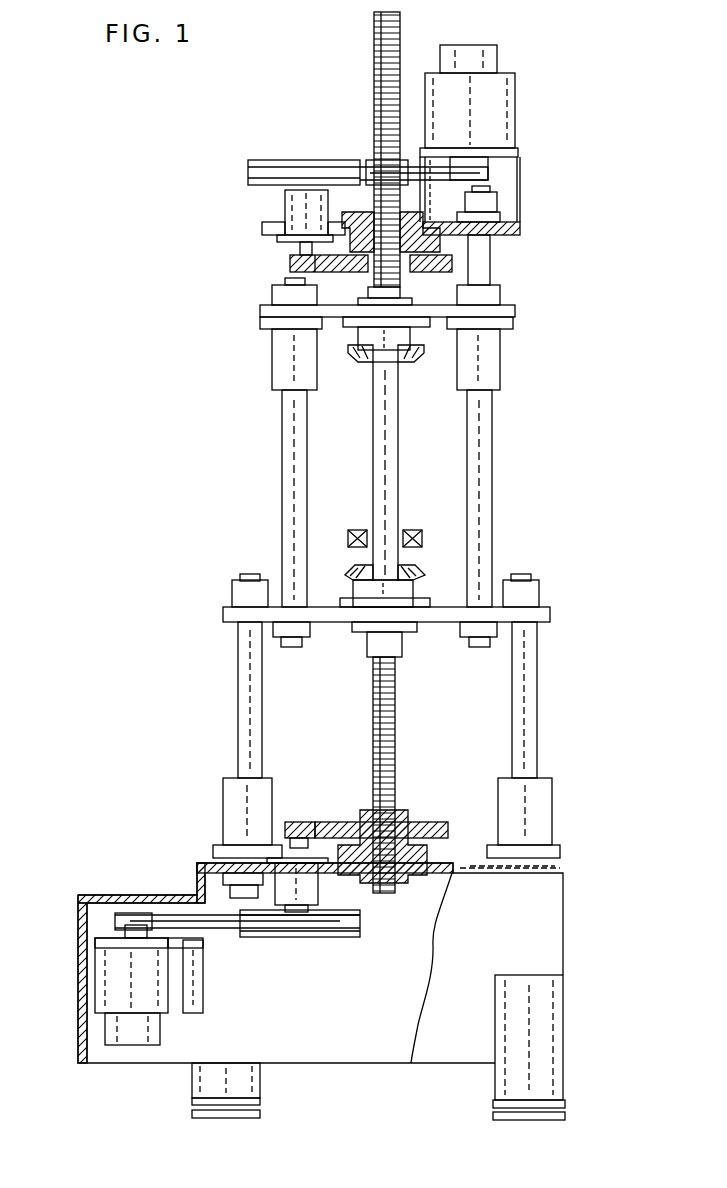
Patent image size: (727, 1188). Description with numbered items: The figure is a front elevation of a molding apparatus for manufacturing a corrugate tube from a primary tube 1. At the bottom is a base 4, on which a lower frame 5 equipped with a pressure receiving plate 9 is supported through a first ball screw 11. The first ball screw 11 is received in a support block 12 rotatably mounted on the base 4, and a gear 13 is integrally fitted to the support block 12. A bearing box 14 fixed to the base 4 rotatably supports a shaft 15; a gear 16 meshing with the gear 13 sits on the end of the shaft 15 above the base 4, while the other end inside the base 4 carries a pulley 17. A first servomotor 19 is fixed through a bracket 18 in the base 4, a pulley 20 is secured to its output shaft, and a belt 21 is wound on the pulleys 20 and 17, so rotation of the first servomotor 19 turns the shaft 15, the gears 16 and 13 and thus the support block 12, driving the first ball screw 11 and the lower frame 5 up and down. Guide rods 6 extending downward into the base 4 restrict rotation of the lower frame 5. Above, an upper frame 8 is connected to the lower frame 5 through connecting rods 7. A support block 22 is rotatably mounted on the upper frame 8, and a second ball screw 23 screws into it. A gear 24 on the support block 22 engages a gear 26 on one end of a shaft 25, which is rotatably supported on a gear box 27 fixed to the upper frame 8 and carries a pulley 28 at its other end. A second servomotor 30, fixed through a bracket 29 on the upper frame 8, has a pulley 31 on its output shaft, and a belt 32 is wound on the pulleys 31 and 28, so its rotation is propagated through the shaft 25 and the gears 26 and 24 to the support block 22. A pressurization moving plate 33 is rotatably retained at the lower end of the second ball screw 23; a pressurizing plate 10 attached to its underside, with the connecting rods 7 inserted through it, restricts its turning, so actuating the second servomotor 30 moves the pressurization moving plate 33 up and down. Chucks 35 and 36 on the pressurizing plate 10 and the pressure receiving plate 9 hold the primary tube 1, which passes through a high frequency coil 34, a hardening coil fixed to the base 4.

The primary tube 1 is at (374, 459).
The base 4 is at (560, 889).
The lower frame 5 is at (551, 613).
The guide rods 6 is at (243, 696).
The connecting rods 7 is at (283, 466).
The upper frame 8 is at (520, 229).
The pressure receiving plate 9 is at (353, 596).
The pressurizing plate 10 is at (358, 340).
The first ball screw 11 is at (395, 736).
The support block 12 is at (398, 815).
The gear 13 is at (437, 823).
The bearing box 14 is at (318, 896).
The shaft 15 is at (292, 842).
The gear 16 is at (300, 823).
The pulley 17 is at (320, 931).
The bracket 18 is at (200, 1001).
The first servomotor 19 is at (97, 986).
The pulley 20 is at (138, 914).
The belt 21 is at (230, 929).
The support block 22 is at (415, 237).
The second ball screw 23 is at (376, 58).
The gear 24 is at (452, 266).
The shaft 25 is at (300, 249).
The gear 26 is at (290, 266).
The gear box 27 is at (287, 199).
The pulley 28 is at (272, 160).
The bracket 29 is at (520, 196).
The second servomotor 30 is at (514, 96).
The pulley 31 is at (488, 174).
The belt 32 is at (372, 172).
The pressurization moving plate 33 is at (515, 312).
The high frequency coil 34 is at (414, 530).
The chuck 35 is at (400, 362).
The chuck 36 is at (420, 571).